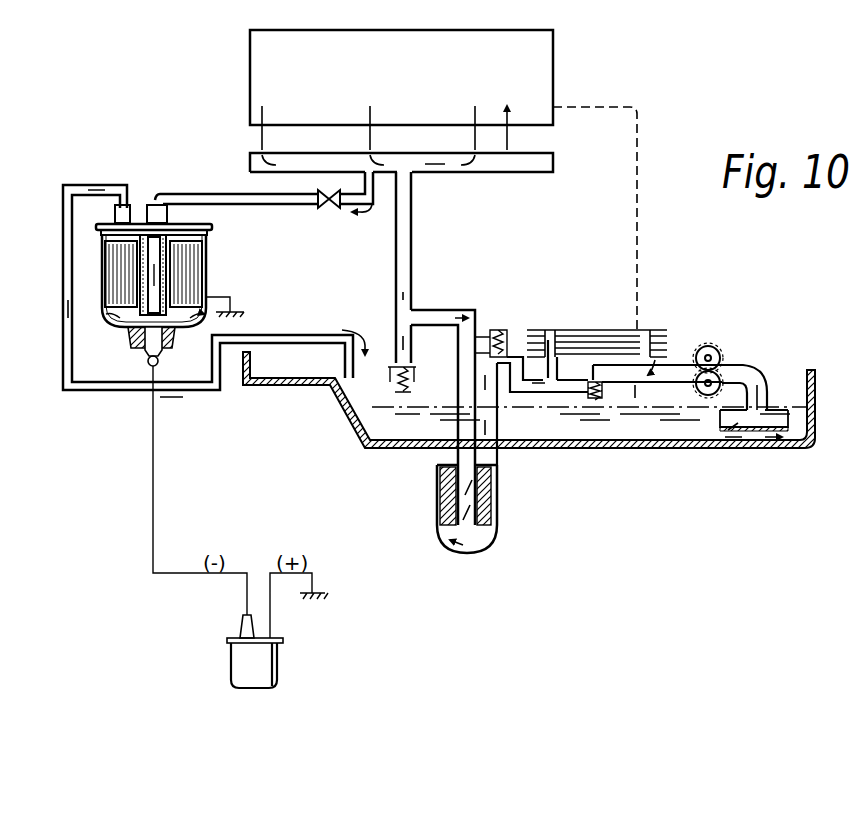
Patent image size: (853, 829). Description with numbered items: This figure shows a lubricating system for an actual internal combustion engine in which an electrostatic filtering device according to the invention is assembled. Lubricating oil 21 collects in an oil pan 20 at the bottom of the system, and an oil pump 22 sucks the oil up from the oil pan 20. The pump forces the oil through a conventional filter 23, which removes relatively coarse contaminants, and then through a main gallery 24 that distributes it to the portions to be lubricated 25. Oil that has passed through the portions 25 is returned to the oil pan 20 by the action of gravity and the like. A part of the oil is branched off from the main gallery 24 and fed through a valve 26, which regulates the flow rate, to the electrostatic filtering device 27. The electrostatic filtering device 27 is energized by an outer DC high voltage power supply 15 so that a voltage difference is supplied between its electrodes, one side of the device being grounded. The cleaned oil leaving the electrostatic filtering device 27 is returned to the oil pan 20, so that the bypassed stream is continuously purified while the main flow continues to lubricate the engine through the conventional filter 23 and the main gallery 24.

The DC high voltage power supply 15 is at (272, 672).
The oil pan 20 is at (640, 447).
The lubricating oil 21 is at (673, 433).
The oil pump 22 is at (717, 345).
The conventional filter 23 is at (497, 522).
The main gallery 24 is at (553, 165).
The portions to be lubricated 25 is at (553, 70).
The valve 26 is at (330, 209).
The electrostatic filtering device 27 is at (208, 224).